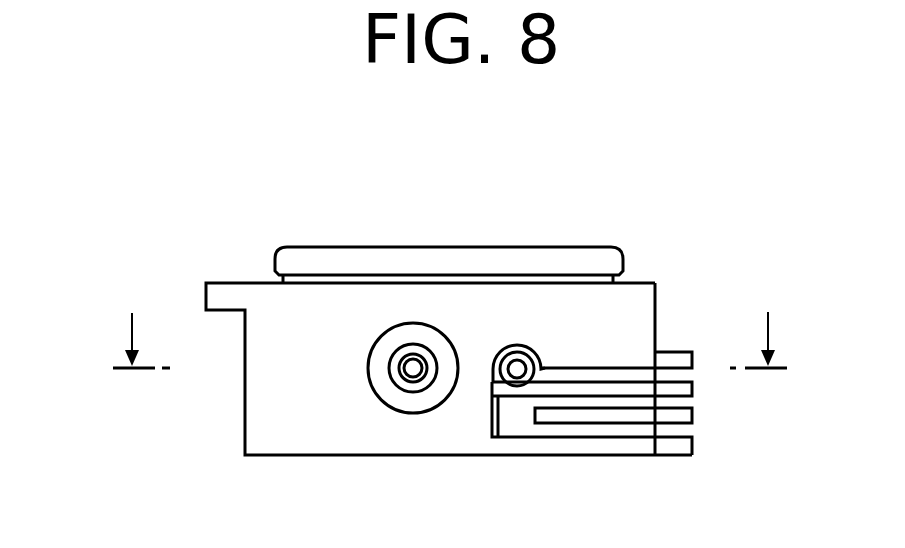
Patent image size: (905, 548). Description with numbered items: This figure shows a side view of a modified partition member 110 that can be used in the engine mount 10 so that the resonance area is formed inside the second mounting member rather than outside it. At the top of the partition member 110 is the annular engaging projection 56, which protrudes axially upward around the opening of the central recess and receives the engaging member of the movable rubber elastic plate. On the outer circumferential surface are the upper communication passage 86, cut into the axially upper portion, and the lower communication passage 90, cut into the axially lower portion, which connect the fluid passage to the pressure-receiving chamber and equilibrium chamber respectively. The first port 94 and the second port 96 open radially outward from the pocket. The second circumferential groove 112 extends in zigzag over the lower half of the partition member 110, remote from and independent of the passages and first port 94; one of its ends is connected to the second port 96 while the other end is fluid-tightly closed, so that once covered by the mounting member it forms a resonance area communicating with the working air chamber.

The engine mount 10 is at (447, 363).
The annular engaging projection 56 is at (318, 257).
The upper communication passage 86 is at (657, 310).
The lower communication passage 90 is at (245, 407).
The first port 94 is at (402, 380).
The second port 96 is at (510, 358).
The partition member 110 is at (590, 202).
The second circumferential groove 112 is at (595, 432).